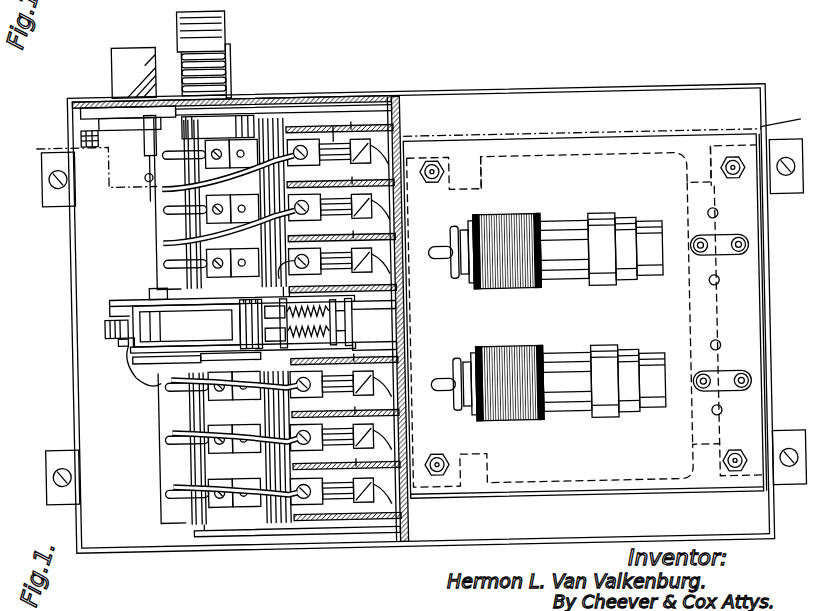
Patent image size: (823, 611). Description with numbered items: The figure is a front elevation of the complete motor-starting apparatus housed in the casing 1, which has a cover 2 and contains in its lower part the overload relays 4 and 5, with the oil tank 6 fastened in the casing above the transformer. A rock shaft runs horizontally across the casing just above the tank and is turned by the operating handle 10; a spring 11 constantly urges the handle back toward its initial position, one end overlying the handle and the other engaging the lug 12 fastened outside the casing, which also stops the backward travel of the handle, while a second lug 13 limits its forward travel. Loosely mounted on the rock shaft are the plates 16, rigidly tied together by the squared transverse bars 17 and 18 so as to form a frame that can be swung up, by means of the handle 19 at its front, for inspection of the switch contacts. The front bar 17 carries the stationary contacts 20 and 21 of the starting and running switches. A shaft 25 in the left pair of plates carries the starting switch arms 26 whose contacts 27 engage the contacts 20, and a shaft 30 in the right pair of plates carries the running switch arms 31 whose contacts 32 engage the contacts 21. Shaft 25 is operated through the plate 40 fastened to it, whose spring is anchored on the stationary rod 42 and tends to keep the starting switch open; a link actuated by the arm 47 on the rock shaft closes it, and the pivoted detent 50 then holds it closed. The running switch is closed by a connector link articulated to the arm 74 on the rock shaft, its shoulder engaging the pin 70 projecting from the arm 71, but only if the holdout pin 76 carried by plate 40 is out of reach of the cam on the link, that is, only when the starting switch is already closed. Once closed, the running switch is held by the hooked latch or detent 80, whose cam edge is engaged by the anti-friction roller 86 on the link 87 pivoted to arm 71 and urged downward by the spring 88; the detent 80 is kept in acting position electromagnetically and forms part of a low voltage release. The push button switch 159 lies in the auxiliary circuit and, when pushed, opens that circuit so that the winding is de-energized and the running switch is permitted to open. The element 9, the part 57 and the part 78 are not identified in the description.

The casing 1 is at (437, 90).
The cover 2 is at (52, 132).
The overload relay 4 is at (515, 370).
The overload relay 5 is at (510, 240).
The oil tank 6 is at (393, 113).
The screw 9 is at (205, 524).
The operating handle 10 is at (183, 27).
The spring 11 is at (233, 70).
The lug 12 is at (234, 45).
The lug 13 is at (139, 42).
The plates 16 is at (292, 112).
The transverse bar 17 is at (276, 110).
The transverse bar 18 is at (260, 311).
The handle 19 is at (286, 288).
The stationary contacts 20 is at (278, 439).
The stationary contacts 21 is at (276, 208).
The shaft 25 is at (262, 404).
The starting switch arms 26 is at (396, 442).
The contacts 27 is at (398, 396).
The shaft 30 is at (248, 120).
The running switch arms 31 is at (721, 311).
The contacts 32 is at (452, 272).
The plate 40 is at (133, 360).
The stationary rod 42 is at (340, 320).
The arm 47 is at (168, 340).
The detent 50 is at (150, 381).
The screw 57 is at (329, 122).
The pin 70 is at (152, 286).
The arm 71 is at (124, 298).
The arm 74 is at (186, 336).
The pin 76 is at (208, 331).
The spring plate 78 is at (280, 306).
The latch or detent 80 is at (246, 299).
The anti-friction roller 86 is at (106, 328).
The link 87 is at (117, 337).
The spring 88 is at (128, 342).
The push button switch 159 is at (157, 143).